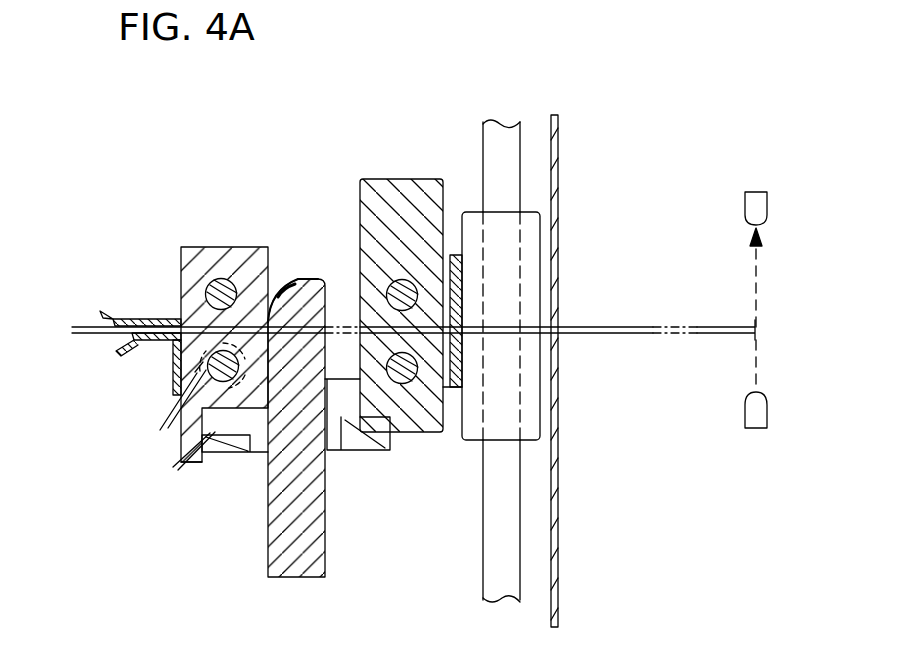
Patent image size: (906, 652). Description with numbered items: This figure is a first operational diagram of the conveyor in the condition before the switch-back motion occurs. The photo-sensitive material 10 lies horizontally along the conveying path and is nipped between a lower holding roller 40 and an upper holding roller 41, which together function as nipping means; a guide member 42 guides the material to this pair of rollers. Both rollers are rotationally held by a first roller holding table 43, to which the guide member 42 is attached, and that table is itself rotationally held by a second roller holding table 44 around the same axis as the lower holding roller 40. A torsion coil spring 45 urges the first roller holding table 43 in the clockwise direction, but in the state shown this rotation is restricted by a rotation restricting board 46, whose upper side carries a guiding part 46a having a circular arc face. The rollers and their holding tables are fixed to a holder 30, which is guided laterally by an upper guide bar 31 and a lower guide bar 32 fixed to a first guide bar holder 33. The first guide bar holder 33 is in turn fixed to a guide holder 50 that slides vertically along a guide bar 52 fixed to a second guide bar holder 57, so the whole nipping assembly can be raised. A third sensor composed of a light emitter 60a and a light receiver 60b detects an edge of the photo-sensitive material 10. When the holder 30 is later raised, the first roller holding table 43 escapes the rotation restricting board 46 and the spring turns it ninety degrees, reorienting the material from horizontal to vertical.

The photo-sensitive material 10 is at (660, 337).
The holder 30 is at (367, 198).
The upper guide bar 31 is at (402, 282).
The lower guide bar 32 is at (407, 385).
The first guide bar holder 33 is at (457, 392).
The lower holding roller 40 is at (210, 355).
The upper holding roller 41 is at (215, 285).
The guide member 42 is at (127, 318).
The first roller holding table 43 is at (178, 277).
The second roller holding table 44 is at (237, 447).
The torsion coil spring 45 is at (213, 440).
The rotation restricting board 46 is at (312, 560).
The guiding part 46a is at (297, 280).
The guide holder 50 is at (533, 238).
The guide bar 52 is at (500, 165).
The second guide bar holder 57 is at (555, 577).
The light emitter 60a is at (755, 430).
The light receiver 60b is at (757, 197).